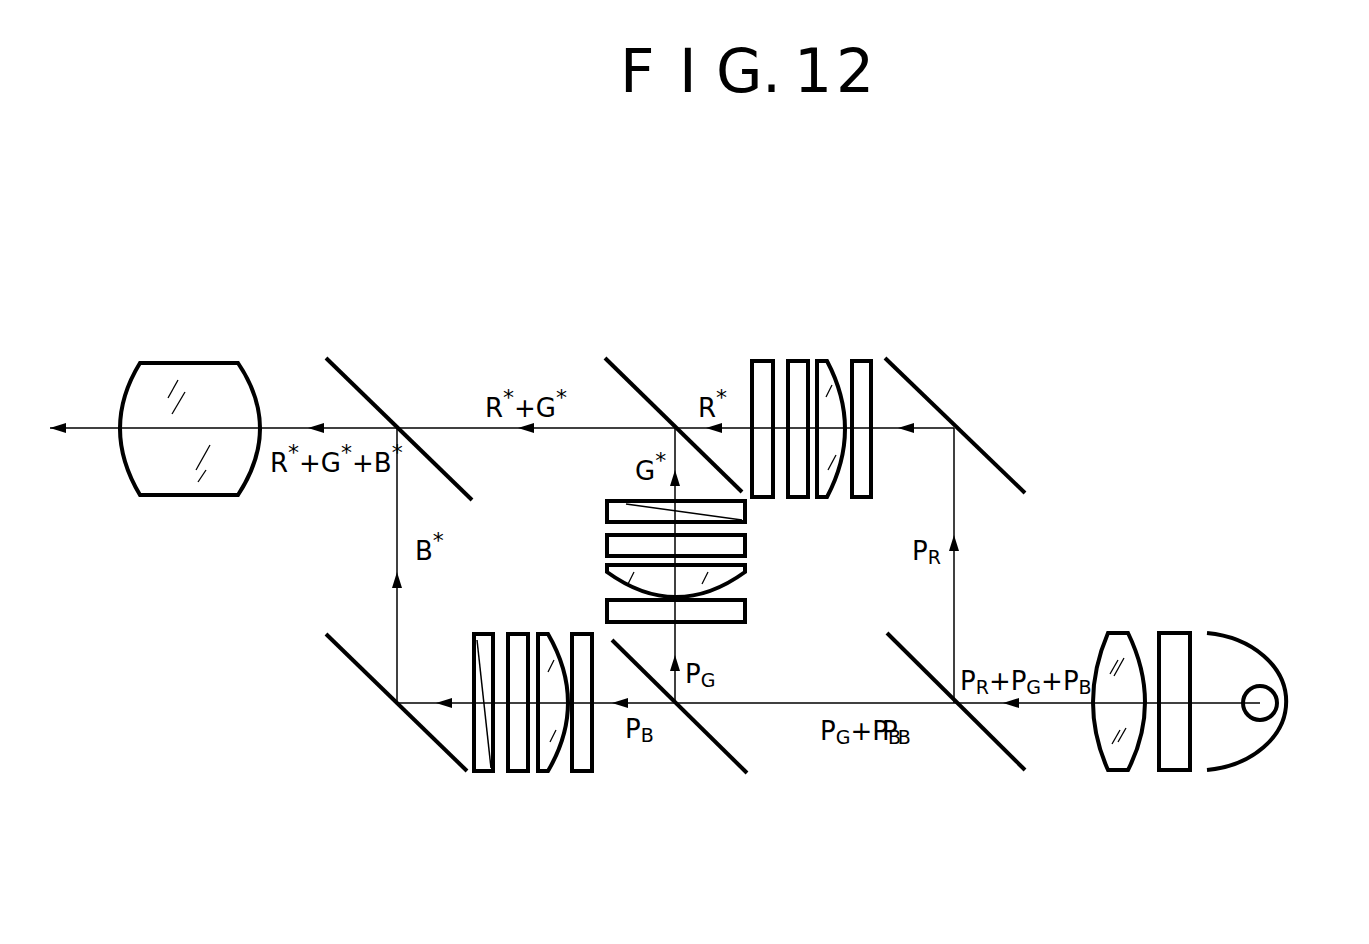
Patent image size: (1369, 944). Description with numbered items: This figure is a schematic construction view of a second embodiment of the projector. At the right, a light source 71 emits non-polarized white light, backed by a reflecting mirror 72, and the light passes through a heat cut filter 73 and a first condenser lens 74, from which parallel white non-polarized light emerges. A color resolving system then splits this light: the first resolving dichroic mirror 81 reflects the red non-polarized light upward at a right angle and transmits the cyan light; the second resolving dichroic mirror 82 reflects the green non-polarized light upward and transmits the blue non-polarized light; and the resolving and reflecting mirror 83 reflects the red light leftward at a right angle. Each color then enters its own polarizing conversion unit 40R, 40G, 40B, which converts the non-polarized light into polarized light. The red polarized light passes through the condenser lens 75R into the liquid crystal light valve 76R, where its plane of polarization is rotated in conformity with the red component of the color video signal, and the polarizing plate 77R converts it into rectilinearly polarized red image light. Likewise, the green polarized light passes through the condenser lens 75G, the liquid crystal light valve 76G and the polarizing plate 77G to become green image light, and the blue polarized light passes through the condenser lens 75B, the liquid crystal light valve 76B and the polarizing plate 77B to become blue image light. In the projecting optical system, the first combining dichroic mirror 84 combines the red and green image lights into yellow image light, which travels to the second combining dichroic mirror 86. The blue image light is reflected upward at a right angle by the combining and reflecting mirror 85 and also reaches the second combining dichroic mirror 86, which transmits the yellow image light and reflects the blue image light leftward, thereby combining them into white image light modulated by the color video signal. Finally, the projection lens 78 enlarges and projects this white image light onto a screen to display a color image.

The projection lens 78 is at (222, 362).
The second combining dichroic mirror 86 is at (352, 378).
The first combining dichroic mirror 84 is at (622, 376).
The resolving and reflecting mirror 83 is at (912, 378).
The polarizing plate for red 77R is at (752, 360).
The liquid crystal light valve for red 76R is at (798, 360).
The condenser lens for red 75R is at (826, 360).
The polarizing conversion unit for red 40R is at (862, 360).
The polarizing plate for green 77G is at (745, 511).
The liquid crystal light valve for green 76G is at (745, 545).
The condenser lens for green 75G is at (745, 572).
The polarizing conversion unit for green 40G is at (745, 611).
The polarizing plate for blue 77B is at (486, 772).
The liquid crystal light valve for blue 76B is at (518, 772).
The condenser lens for blue 75B is at (543, 772).
The polarizing conversion unit for blue 40B is at (585, 772).
The second resolving dichroic mirror 82 is at (730, 753).
The combining and reflecting mirror 85 is at (435, 745).
The first resolving dichroic mirror 81 is at (1005, 757).
The first condenser lens 74 is at (1115, 633).
The heat cut filter 73 is at (1172, 633).
The reflecting mirror 72 is at (1288, 738).
The light source 71 is at (1277, 698).